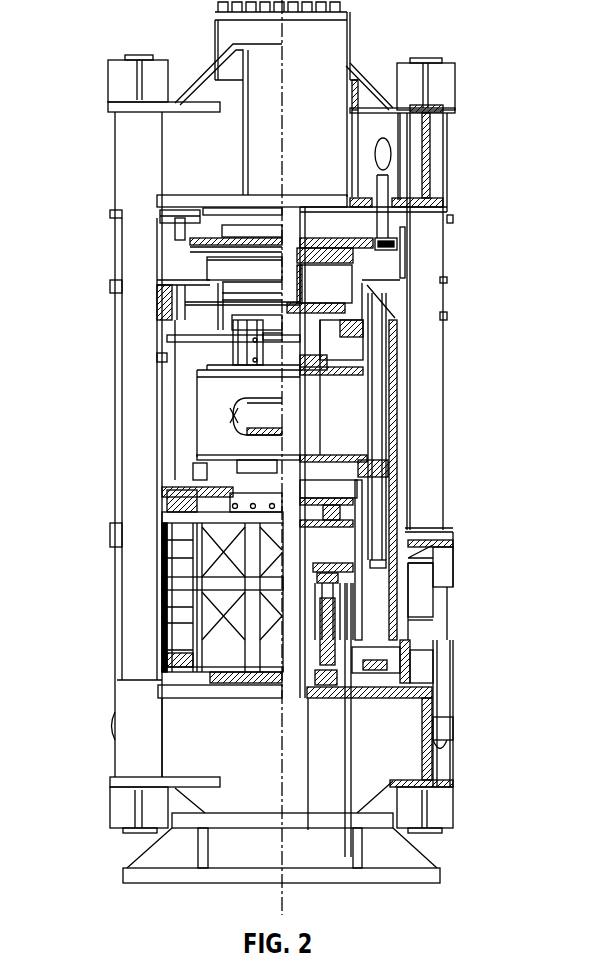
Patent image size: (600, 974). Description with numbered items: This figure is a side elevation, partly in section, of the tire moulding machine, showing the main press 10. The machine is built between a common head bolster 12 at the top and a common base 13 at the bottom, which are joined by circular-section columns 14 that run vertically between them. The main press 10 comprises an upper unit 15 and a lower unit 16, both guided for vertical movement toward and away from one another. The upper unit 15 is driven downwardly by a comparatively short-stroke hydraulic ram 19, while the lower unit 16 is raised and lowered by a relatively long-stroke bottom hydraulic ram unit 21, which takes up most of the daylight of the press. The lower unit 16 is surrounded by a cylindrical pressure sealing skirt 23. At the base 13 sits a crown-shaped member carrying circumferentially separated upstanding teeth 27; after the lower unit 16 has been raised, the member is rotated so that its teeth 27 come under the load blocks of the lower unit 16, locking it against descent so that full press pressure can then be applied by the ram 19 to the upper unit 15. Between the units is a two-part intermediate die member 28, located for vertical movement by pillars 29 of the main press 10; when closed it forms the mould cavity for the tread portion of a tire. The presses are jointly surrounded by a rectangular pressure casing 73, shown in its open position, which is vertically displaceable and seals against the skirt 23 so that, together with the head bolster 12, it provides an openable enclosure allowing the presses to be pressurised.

The main press 10 is at (92, 396).
The head bolster 12 is at (328, 60).
The base 13 is at (127, 866).
The columns 14 is at (137, 450).
The upper unit 15 is at (333, 377).
The lower unit 16 is at (413, 480).
The hydraulic ram 19 is at (298, 287).
The bottom hydraulic ram unit 21 is at (235, 603).
The pressure sealing skirt 23 is at (358, 638).
The teeth 27 is at (357, 672).
The intermediate die member 28 is at (320, 455).
The pillars 29 is at (380, 420).
The pressure casing 73 is at (160, 508).